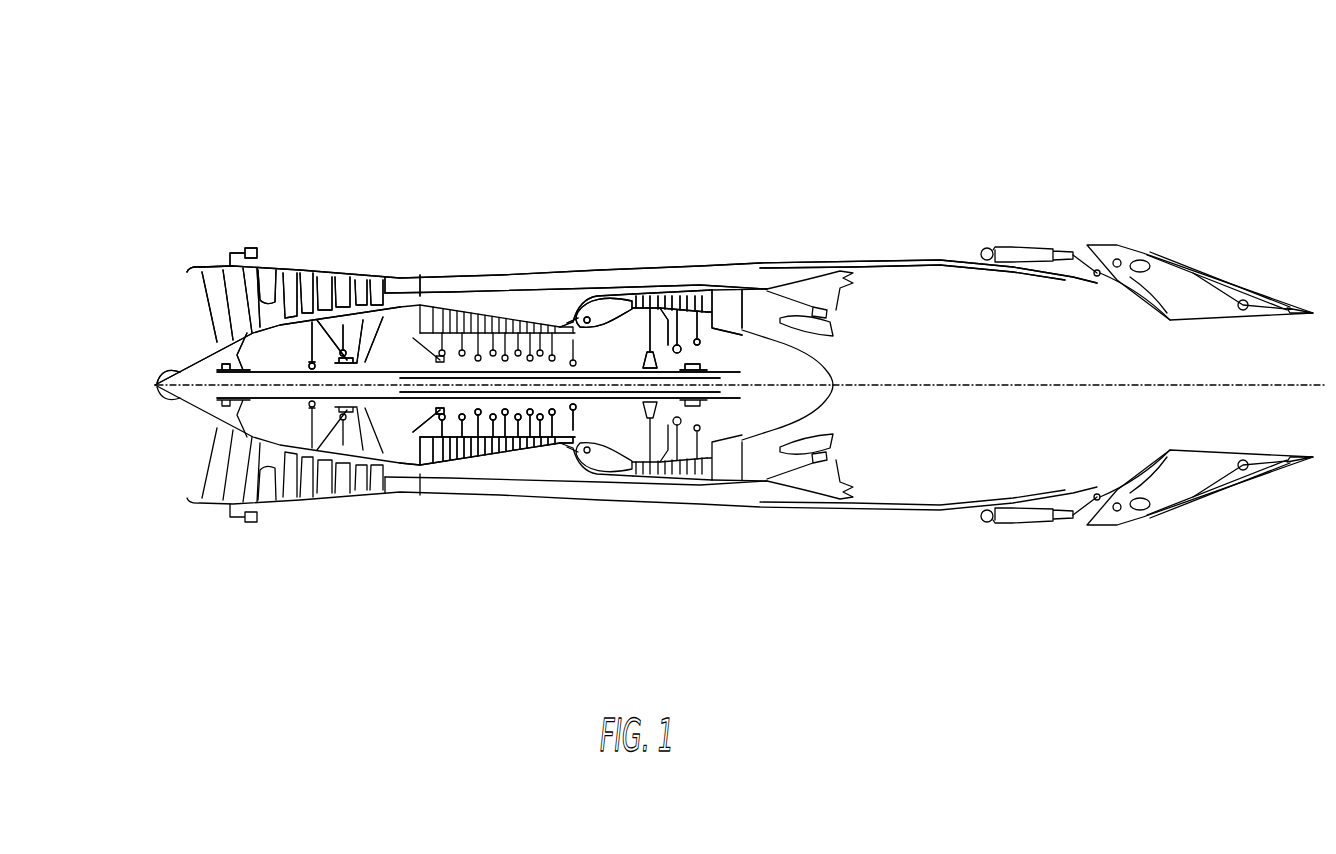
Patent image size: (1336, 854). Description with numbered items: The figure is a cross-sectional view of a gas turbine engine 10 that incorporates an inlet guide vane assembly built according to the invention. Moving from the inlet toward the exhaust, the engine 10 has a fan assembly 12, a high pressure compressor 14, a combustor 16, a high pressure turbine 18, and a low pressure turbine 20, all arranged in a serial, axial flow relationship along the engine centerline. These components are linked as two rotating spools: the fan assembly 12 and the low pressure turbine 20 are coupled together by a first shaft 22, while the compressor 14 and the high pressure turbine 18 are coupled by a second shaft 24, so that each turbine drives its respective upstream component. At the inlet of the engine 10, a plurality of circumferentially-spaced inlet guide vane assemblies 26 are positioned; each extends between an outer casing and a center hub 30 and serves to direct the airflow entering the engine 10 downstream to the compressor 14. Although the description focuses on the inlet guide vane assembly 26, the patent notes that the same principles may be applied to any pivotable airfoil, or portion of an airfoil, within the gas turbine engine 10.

The gas turbine engine 10 is at (368, 126).
The fan assembly 12 is at (322, 265).
The high pressure compressor 14 is at (510, 457).
The combustor 16 is at (615, 300).
The high pressure turbine 18 is at (652, 310).
The low pressure turbine 20 is at (690, 295).
The first shaft 22 is at (585, 376).
The second shaft 24 is at (587, 396).
The inlet guide vane assembly 26 is at (195, 311).
The center hub 30 is at (155, 386).